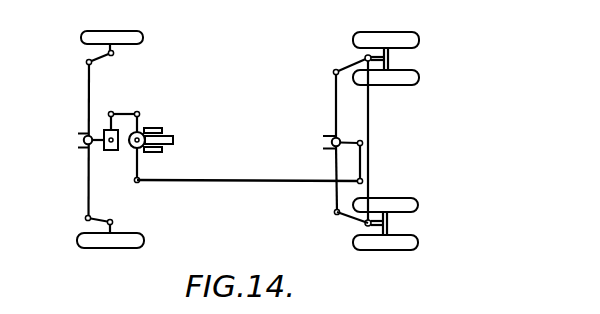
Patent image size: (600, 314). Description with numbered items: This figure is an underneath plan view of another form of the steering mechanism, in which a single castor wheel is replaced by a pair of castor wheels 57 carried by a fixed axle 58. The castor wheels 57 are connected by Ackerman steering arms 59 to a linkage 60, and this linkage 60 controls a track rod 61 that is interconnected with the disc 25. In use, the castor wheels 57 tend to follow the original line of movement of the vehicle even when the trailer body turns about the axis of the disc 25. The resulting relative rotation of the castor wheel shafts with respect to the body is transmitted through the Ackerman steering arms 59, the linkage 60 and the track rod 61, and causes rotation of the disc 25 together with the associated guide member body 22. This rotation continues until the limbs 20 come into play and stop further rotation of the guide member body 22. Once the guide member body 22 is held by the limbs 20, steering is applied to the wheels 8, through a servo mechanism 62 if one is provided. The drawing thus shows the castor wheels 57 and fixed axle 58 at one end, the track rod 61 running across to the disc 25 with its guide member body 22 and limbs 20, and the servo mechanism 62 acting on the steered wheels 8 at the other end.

The wheels 8 is at (137, 35).
The limbs 20 is at (153, 128).
The guide member body 22 is at (173, 140).
The disc 25 is at (143, 146).
The castor wheels 57 is at (362, 38).
The fixed axle 58 is at (370, 123).
The Ackerman steering arms 59 is at (347, 220).
The linkage 60 is at (341, 135).
The track rod 61 is at (292, 183).
The servo mechanism 62 is at (110, 150).